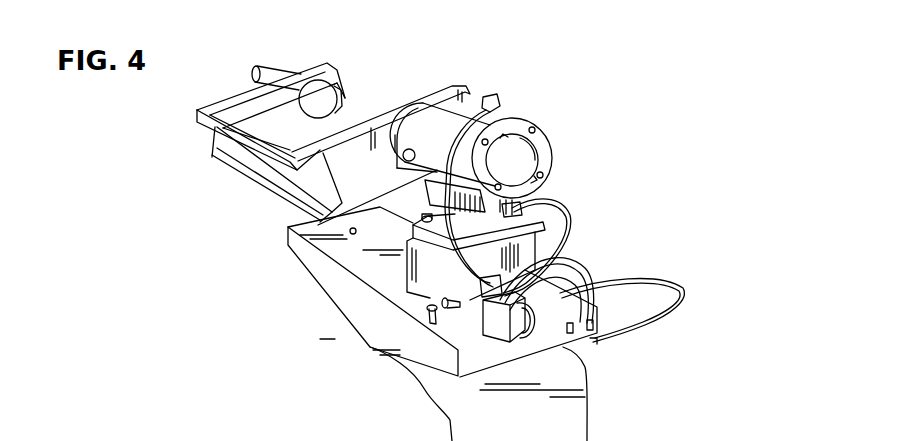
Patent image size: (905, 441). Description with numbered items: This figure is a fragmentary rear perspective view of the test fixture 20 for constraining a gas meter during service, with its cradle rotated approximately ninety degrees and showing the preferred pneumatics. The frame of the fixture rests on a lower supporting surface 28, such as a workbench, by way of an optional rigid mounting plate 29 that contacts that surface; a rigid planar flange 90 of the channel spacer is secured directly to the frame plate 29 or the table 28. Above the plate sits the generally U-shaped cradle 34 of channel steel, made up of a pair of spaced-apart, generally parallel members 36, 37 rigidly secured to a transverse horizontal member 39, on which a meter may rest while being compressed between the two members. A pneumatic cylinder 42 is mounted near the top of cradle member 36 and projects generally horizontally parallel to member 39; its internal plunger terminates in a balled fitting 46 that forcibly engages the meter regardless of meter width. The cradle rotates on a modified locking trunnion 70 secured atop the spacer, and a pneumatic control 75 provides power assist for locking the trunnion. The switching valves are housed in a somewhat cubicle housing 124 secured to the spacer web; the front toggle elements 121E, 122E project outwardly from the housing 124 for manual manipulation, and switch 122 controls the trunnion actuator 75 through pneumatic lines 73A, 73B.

The test fixture 20 is at (537, 44).
The lower supporting surface 28 is at (565, 378).
The mounting plate 29 is at (340, 258).
The cradle 34 is at (212, 152).
The vertical cradle member 36 is at (247, 104).
The vertical cradle member 37 is at (447, 87).
The transverse horizontal member 39 is at (268, 177).
The pneumatic cylinder 42 is at (278, 72).
The balled fitting 46 is at (320, 100).
The locking trunnion 70 is at (535, 121).
The pneumatic line 73A is at (483, 105).
The pneumatic line 73B is at (560, 206).
The pneumatic control 75 is at (534, 158).
The planar flange 90 is at (443, 303).
The front toggle element 121E is at (440, 324).
The pneumatic switching valve 122 is at (497, 315).
The front toggle element 122E is at (490, 313).
The housing 124 is at (405, 276).